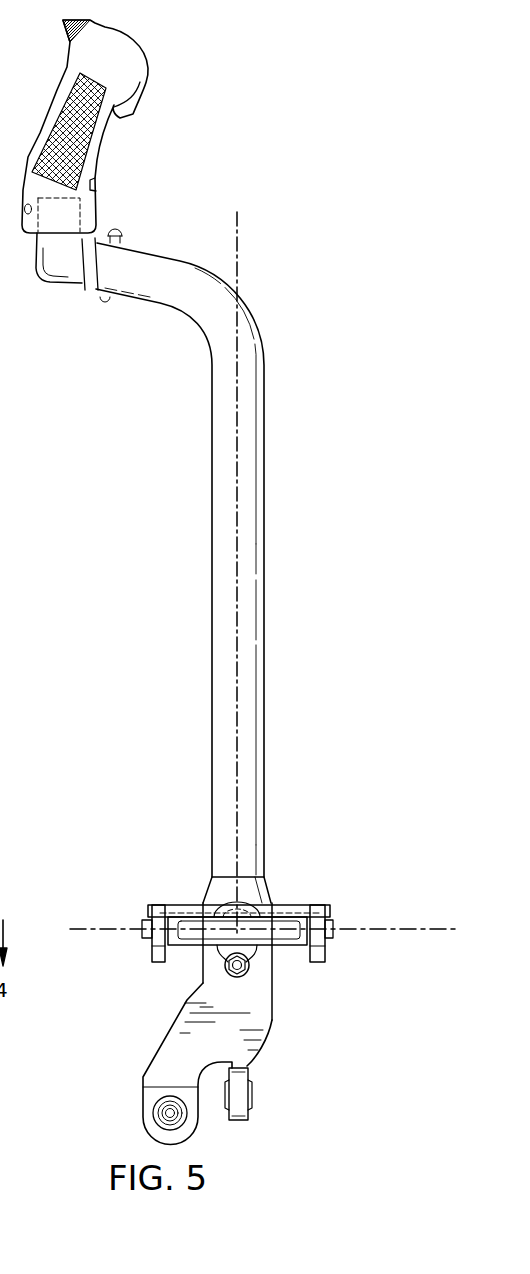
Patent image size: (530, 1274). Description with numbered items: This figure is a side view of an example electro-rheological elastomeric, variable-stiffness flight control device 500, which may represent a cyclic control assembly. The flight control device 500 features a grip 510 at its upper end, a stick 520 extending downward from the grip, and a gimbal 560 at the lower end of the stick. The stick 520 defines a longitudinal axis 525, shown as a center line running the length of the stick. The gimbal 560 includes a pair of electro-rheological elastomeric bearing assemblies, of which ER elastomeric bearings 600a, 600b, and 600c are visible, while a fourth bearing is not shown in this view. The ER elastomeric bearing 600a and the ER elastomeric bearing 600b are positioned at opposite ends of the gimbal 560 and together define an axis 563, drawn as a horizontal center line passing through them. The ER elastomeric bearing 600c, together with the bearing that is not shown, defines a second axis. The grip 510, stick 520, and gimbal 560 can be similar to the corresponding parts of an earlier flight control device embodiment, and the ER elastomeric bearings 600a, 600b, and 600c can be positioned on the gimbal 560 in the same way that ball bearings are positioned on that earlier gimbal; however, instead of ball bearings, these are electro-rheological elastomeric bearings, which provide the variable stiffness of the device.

The flight control device 500 is at (233, 90).
The grip 510 is at (57, 87).
The stick 520 is at (212, 548).
The axis 525 is at (239, 222).
The gimbal 560 is at (186, 946).
The axis 563 is at (83, 928).
The ER elastomeric bearing 600a is at (151, 946).
The ER elastomeric bearing 600b is at (327, 950).
The ER elastomeric bearing 600c is at (278, 947).